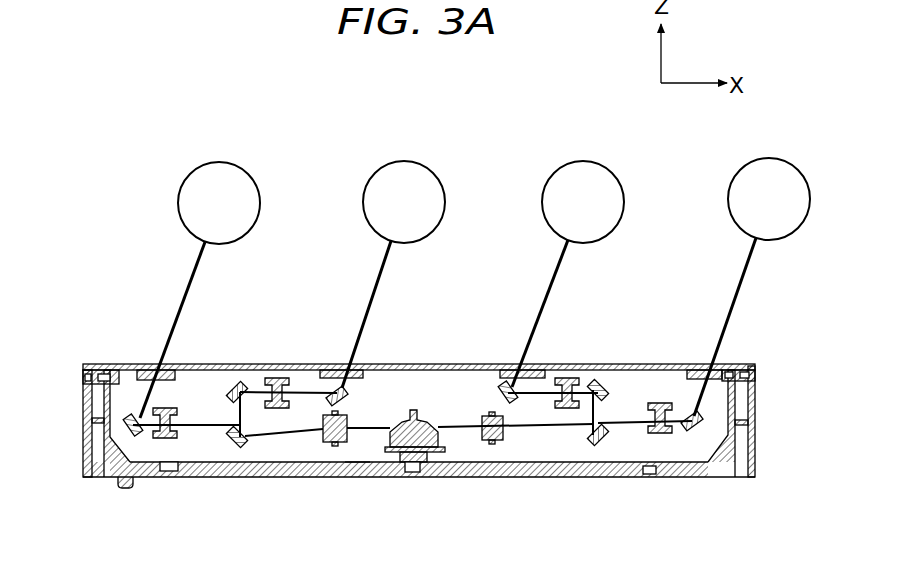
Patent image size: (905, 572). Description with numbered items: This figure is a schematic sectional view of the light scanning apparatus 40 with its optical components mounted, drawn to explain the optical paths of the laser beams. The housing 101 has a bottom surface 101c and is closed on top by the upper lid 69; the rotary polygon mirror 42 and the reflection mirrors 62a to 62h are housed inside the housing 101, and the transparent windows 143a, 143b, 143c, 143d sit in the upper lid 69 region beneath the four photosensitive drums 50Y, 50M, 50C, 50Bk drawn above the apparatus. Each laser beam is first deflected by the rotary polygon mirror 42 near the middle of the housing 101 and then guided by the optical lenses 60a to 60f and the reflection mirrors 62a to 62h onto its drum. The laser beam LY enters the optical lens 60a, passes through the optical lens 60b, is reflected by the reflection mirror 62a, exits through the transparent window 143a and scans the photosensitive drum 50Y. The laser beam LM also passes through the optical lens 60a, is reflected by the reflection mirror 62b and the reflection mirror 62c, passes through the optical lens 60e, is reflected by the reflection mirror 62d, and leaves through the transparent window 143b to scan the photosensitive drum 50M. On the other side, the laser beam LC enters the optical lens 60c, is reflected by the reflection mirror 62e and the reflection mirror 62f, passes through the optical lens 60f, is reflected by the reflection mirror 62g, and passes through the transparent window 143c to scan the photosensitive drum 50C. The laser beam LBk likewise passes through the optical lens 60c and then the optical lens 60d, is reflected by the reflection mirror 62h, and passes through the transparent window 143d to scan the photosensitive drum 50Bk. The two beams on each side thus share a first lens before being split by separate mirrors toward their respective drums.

The light scanning apparatus 40 is at (76, 424).
The rotary polygon mirror 42 is at (432, 423).
The photosensitive drum 50Y is at (178, 202).
The photosensitive drum 50M is at (400, 162).
The photosensitive drum 50C is at (580, 162).
The photosensitive drum 50Bk is at (768, 158).
The laser beam LY is at (172, 330).
The laser beam LM is at (366, 313).
The laser beam LC is at (540, 312).
The laser beam LBk is at (725, 326).
The optical lens 60a is at (327, 445).
The optical lens 60b is at (177, 407).
The optical lens 60c is at (490, 442).
The optical lens 60d is at (668, 434).
The optical lens 60e is at (282, 378).
The optical lens 60f is at (566, 378).
The reflection mirror 62a is at (130, 486).
The reflection mirror 62b is at (234, 447).
The reflection mirror 62c is at (246, 384).
The reflection mirror 62d is at (348, 386).
The reflection mirror 62e is at (603, 447).
The reflection mirror 62f is at (617, 363).
The reflection mirror 62g is at (505, 384).
The reflection mirror 62h is at (697, 432).
The upper lid 69 is at (597, 384).
The housing 101 is at (542, 466).
The bottom surface 101c is at (357, 450).
The transparent window 143a is at (145, 370).
The transparent window 143b is at (347, 370).
The transparent window 143c is at (518, 370).
The transparent window 143d is at (705, 370).